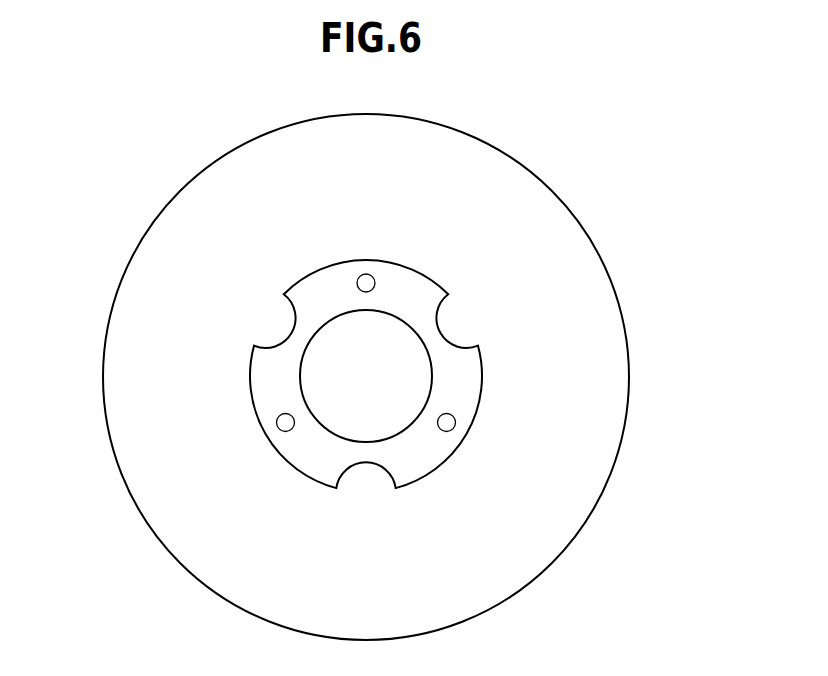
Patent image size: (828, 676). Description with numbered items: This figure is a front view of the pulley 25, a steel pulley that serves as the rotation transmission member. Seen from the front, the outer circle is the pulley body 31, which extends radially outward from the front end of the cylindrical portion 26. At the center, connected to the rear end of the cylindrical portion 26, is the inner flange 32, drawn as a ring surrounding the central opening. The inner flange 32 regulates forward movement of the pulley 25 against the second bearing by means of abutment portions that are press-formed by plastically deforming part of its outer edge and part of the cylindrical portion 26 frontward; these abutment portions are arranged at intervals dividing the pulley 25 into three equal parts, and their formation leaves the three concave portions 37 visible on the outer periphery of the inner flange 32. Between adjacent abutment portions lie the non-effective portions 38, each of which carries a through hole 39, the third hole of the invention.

The pulley 25 is at (567, 200).
The cylindrical portion 26 is at (300, 277).
The pulley body 31 is at (543, 285).
The inner flange 32 is at (303, 357).
The concave portions 37 is at (276, 327).
The non-effective portions 38 is at (333, 284).
The through hole 39 is at (367, 281).